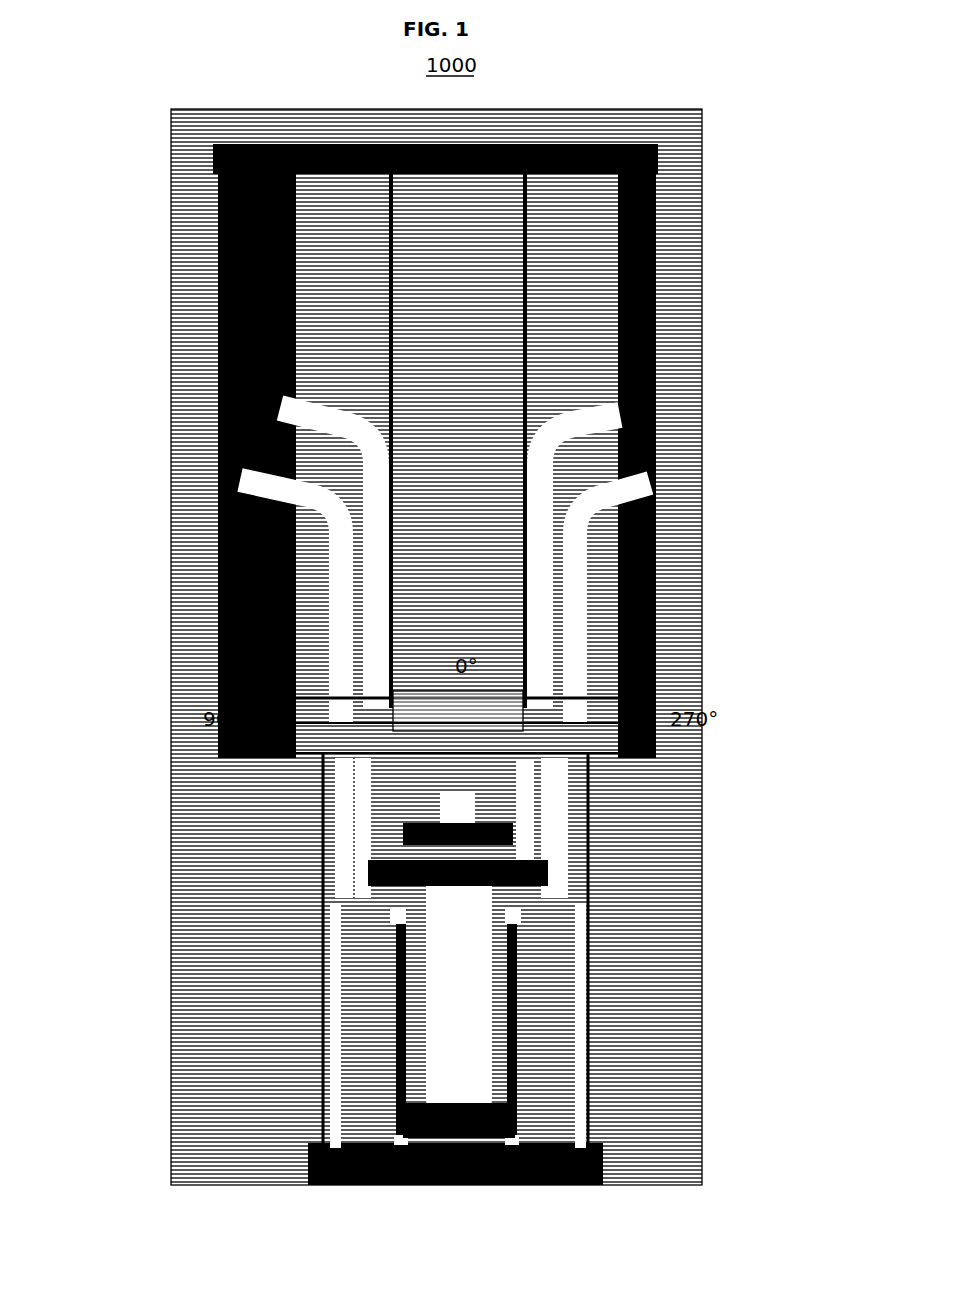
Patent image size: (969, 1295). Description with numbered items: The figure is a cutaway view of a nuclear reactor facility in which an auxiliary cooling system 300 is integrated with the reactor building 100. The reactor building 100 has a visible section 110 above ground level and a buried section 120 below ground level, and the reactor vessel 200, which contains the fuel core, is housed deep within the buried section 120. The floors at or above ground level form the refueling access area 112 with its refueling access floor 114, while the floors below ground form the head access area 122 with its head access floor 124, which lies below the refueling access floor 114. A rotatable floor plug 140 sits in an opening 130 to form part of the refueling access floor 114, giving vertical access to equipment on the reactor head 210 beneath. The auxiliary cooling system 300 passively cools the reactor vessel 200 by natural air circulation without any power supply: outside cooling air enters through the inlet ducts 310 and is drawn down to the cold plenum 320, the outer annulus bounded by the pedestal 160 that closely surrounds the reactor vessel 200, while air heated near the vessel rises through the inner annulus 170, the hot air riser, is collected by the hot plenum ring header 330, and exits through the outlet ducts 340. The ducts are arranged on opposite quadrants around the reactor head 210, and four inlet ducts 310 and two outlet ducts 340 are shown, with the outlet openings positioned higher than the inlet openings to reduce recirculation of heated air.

The reactor building 100 is at (551, 647).
The visible section 110 is at (532, 451).
The refueling access area 112 is at (420, 318).
The refueling access floor 114 is at (322, 680).
The buried section 120 is at (579, 968).
The head access area 122 is at (440, 763).
The head access floor 124 is at (440, 855).
The opening 130 is at (400, 730).
The floor plug 140 is at (405, 705).
The pedestal 160 is at (383, 1010).
The inner annulus 170 is at (398, 1085).
The reactor vessel 200 is at (420, 978).
The reactor head 210 is at (448, 867).
The auxiliary cooling system 300 is at (48, 532).
The inlet ducts 310 is at (553, 628).
The cold plenum 320 is at (360, 1048).
The hot plenum ring header 330 is at (387, 908).
The outlet ducts 340 is at (350, 428).